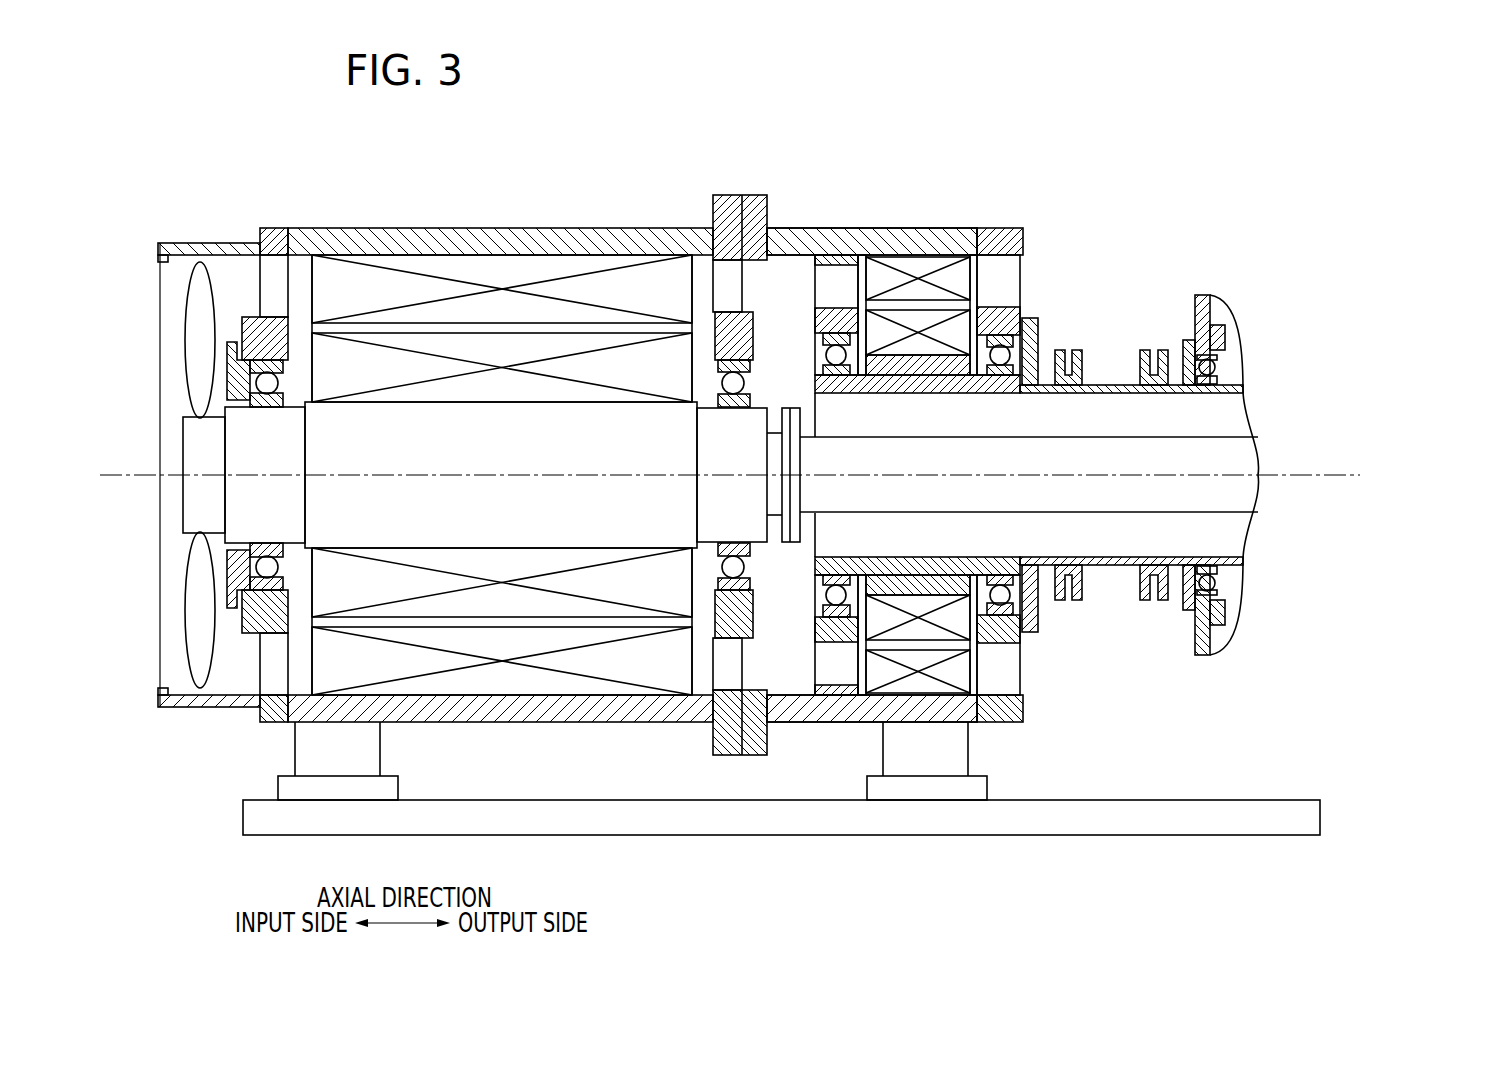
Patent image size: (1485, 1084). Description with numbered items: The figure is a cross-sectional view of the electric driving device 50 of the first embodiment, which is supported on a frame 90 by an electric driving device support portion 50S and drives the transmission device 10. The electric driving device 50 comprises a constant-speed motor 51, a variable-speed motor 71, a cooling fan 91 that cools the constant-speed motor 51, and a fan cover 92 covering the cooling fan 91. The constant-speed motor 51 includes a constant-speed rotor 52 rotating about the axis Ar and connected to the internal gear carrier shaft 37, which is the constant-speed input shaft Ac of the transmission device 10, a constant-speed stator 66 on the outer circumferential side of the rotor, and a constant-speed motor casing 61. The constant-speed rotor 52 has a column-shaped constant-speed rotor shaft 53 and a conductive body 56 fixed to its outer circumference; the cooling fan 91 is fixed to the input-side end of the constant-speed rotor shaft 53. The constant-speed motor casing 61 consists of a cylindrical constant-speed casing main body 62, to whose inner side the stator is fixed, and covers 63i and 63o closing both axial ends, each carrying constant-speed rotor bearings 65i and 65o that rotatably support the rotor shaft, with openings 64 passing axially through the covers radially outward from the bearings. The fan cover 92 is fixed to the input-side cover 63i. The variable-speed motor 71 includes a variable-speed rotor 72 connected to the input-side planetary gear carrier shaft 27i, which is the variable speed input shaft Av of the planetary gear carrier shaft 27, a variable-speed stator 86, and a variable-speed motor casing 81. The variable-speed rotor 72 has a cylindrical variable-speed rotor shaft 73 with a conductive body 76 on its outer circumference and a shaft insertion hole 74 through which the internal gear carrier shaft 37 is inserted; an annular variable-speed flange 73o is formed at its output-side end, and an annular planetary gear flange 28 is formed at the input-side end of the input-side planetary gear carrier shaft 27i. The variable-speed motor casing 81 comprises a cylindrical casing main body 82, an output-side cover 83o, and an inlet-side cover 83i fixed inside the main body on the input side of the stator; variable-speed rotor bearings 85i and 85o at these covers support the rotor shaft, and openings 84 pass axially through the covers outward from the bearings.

The transmission device 10 is at (1268, 603).
The planetary gear carrier shaft 27 is at (1141, 437).
The input-side planetary gear carrier shaft 27i is at (1243, 388).
The planetary gear flange 28 is at (1195, 332).
The internal gear carrier shaft 37 is at (1232, 500).
The electric driving device 50 is at (290, 184).
The electric driving device support portion 50S is at (323, 764).
The constant-speed motor 51 is at (272, 216).
The constant-speed rotor 52 is at (443, 632).
The constant-speed rotor shaft 53 is at (600, 520).
The conductive body 56 is at (513, 600).
The constant-speed motor casing 61 is at (532, 218).
The constant-speed casing main body 62 is at (577, 240).
The input-side cover 63i is at (248, 276).
The output-side cover 63o is at (727, 195).
The openings 64 is at (236, 312).
The input-side constant-speed rotor bearing 65i is at (272, 380).
The output-side constant-speed rotor bearing 65o is at (725, 380).
The constant-speed stator 66 is at (473, 272).
The variable-speed motor 71 is at (1012, 208).
The variable-speed rotor 72 is at (943, 905).
The variable-speed rotor shaft 73 is at (884, 580).
The variable-speed flange 73o is at (1058, 350).
The shaft insertion hole 74 is at (848, 557).
The conductive body 76 is at (926, 627).
The variable-speed motor casing 81 is at (910, 218).
The casing main body 82 is at (935, 240).
The inlet-side cover 83i is at (820, 275).
The output-side cover 83o is at (990, 232).
The openings 84 is at (825, 262).
The input-side variable-speed rotor bearing 85i is at (830, 352).
The output-side variable-speed rotor bearing 85o is at (1002, 352).
The variable-speed stator 86 is at (953, 280).
The frame 90 is at (1086, 820).
The cooling fan 91 is at (190, 243).
The fan cover 92 is at (183, 708).